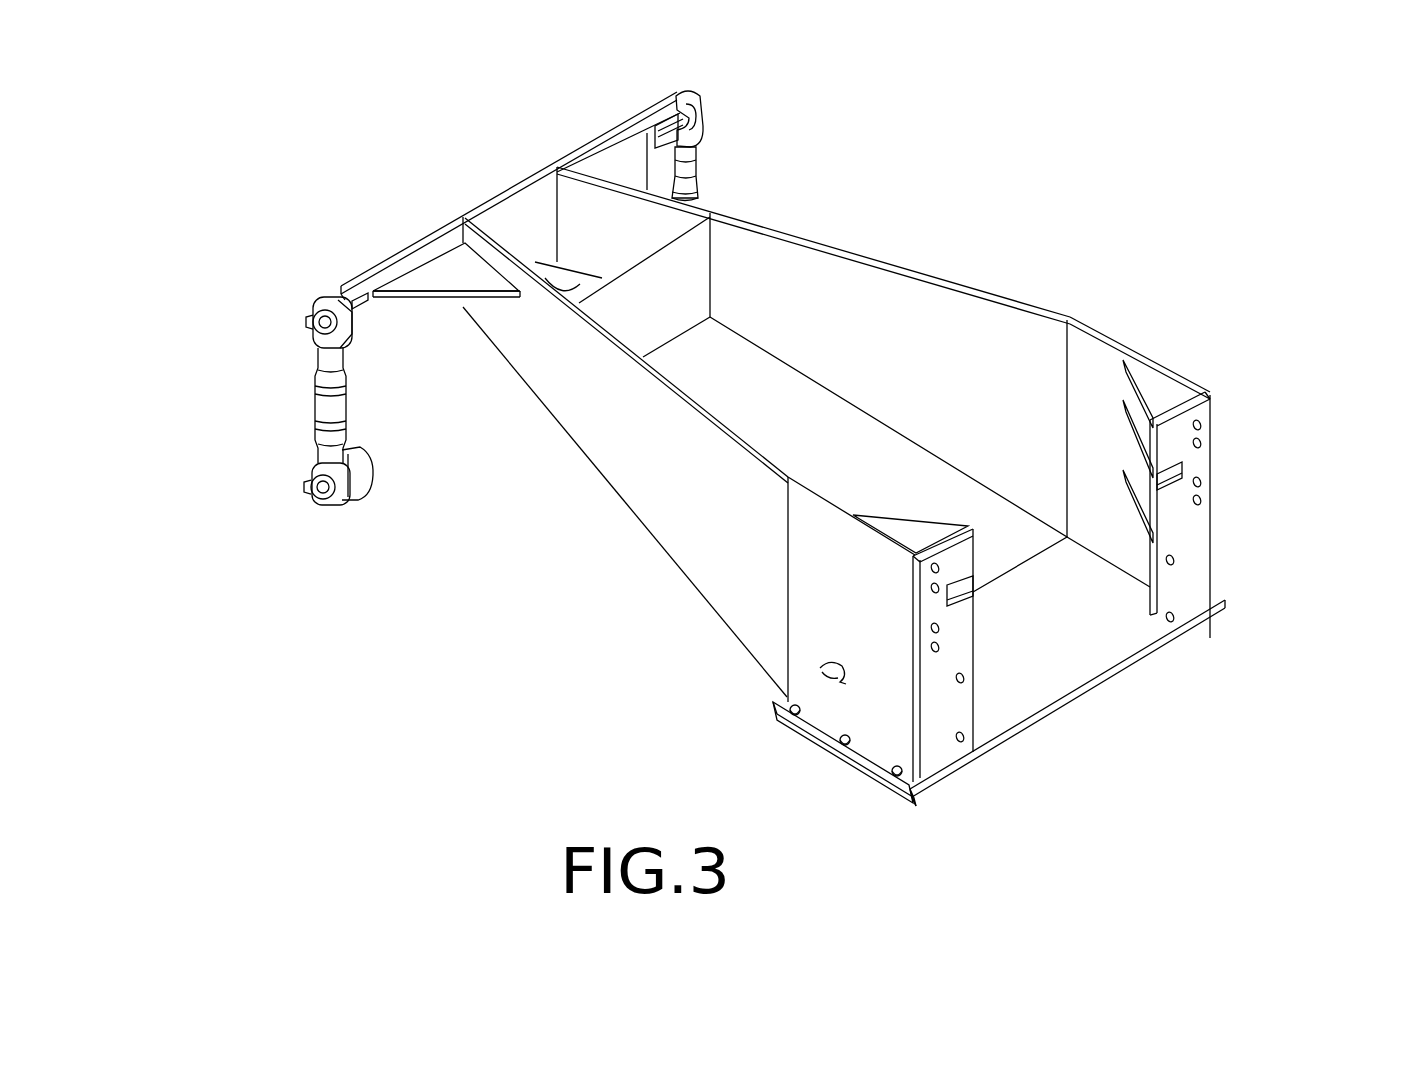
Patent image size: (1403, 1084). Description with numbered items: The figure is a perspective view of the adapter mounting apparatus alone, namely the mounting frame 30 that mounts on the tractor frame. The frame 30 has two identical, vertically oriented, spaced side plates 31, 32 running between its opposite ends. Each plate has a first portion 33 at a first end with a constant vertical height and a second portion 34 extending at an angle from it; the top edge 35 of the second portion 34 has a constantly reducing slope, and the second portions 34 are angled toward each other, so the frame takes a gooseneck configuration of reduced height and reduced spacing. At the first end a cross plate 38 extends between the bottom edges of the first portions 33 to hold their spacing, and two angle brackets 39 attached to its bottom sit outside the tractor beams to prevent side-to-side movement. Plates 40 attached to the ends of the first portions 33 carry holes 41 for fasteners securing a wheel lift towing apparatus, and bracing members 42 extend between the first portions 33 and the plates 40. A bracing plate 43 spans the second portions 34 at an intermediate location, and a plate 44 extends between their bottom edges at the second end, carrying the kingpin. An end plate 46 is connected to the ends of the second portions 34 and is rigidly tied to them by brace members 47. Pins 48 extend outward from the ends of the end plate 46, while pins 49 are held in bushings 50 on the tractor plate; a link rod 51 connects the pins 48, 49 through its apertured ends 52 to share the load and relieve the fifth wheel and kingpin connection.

The mounting frame 30 is at (1110, 363).
The side plate 31 is at (653, 602).
The side plate 32 is at (661, 350).
The first portion 33 is at (802, 640).
The second portion 34 is at (546, 464).
The top edge 35 is at (813, 232).
The cross plate 38 is at (1067, 720).
The angle bracket 39 is at (1095, 767).
The plate 40 is at (990, 744).
The hole 41 is at (1126, 719).
The bracing member 42 is at (1214, 450).
The bracing plate 43 is at (717, 225).
The plate 44 is at (518, 183).
The end plate 46 is at (504, 196).
The brace member 47 is at (446, 331).
The pin 48 is at (423, 385).
The pin 49 is at (267, 469).
The bushing 50 is at (416, 503).
The link rod 51 is at (268, 387).
The apertured end 52 is at (311, 445).